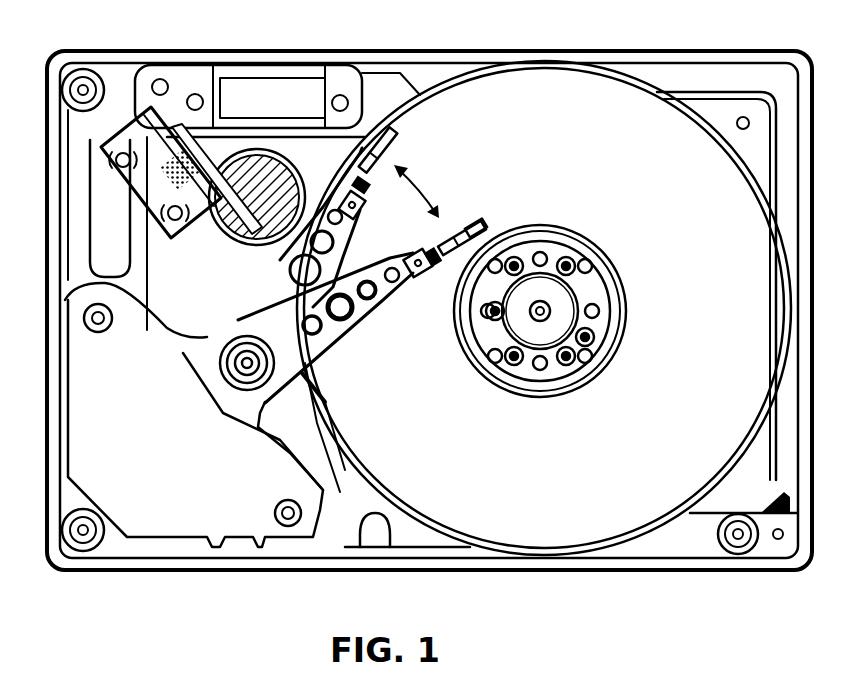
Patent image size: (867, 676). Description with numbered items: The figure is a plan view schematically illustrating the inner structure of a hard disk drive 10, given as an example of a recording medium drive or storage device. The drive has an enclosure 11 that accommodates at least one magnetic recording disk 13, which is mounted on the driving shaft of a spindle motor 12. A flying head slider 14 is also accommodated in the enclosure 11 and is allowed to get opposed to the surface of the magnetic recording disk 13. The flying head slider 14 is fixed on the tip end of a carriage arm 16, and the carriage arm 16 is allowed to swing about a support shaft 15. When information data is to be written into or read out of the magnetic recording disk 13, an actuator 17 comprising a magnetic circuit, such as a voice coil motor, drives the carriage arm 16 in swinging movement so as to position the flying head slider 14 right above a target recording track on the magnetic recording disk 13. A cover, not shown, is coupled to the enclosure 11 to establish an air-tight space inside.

The hard disk drive 10 is at (400, 46).
The enclosure 11 is at (622, 50).
The spindle motor 12 is at (558, 322).
The magnetic recording disk 13 is at (668, 220).
The flying head slider 14 is at (463, 222).
The support shaft 15 is at (247, 345).
The carriage arm 16 is at (363, 322).
The actuator 17 is at (163, 455).